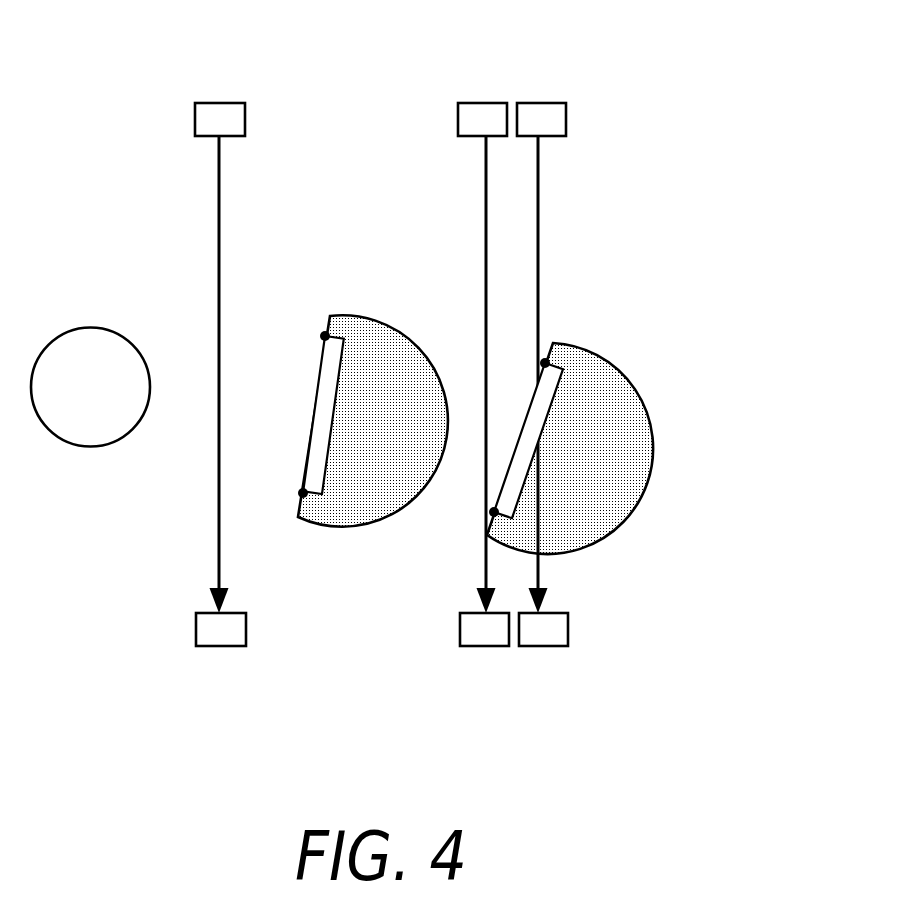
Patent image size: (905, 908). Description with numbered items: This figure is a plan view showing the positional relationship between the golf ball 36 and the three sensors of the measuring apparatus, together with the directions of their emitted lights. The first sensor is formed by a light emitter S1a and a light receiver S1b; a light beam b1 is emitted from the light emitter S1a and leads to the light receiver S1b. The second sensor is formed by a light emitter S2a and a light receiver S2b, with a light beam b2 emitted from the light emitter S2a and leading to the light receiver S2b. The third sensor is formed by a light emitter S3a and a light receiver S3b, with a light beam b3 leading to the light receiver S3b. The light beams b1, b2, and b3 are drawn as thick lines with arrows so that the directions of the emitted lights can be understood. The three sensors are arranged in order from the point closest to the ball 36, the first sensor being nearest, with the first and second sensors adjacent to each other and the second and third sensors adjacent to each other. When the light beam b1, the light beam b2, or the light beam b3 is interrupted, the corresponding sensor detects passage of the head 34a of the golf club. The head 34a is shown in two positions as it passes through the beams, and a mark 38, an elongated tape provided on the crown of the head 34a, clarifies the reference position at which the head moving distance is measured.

The head 34a is at (395, 350).
The mark 38 is at (327, 380).
The golf ball 36 is at (88, 432).
The light beam b1 is at (218, 199).
The light beam b2 is at (484, 194).
The light beam b3 is at (540, 197).
The light emitter S1a is at (218, 110).
The light emitter S2a is at (482, 110).
The light emitter S3a is at (542, 110).
The light receiver S1b is at (222, 638).
The light receiver S2b is at (485, 638).
The light receiver S3b is at (545, 638).